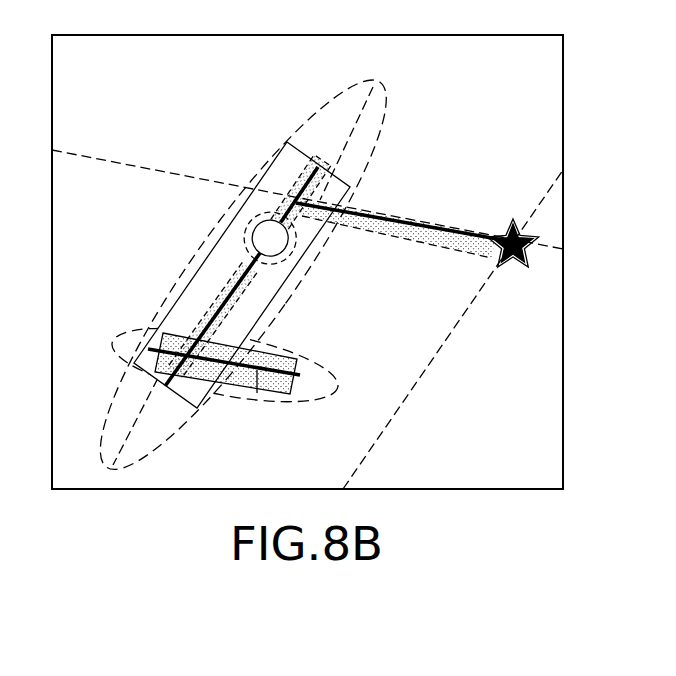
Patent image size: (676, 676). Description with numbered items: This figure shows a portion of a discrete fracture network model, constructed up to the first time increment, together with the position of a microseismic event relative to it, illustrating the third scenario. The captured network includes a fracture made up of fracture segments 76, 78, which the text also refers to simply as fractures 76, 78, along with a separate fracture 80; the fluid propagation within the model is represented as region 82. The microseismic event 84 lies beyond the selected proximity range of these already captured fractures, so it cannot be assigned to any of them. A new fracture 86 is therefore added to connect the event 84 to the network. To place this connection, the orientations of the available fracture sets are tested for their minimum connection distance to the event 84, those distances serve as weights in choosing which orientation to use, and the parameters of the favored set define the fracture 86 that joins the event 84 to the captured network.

The fracture segment 76 is at (302, 181).
The fracture segment 78 is at (230, 290).
The fracture 80 is at (257, 393).
The region 82 is at (423, 237).
The microseismic event 84 is at (523, 234).
The new fracture 86 is at (403, 218).